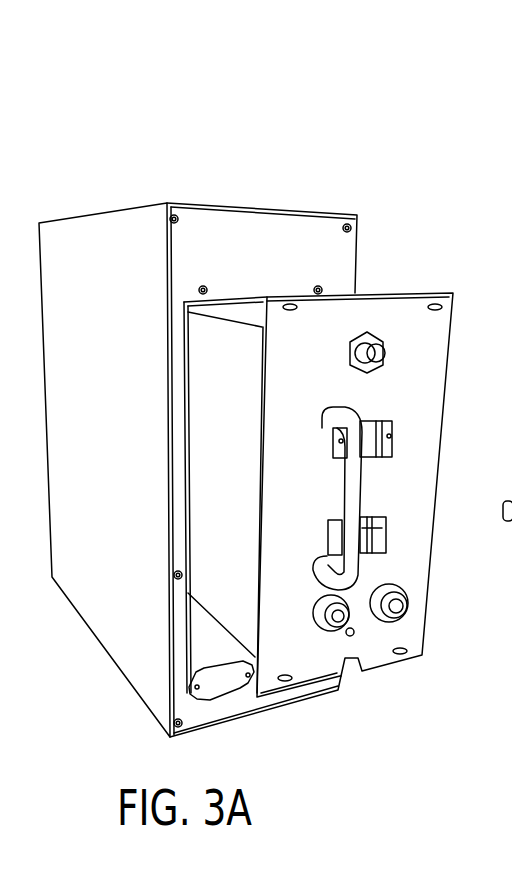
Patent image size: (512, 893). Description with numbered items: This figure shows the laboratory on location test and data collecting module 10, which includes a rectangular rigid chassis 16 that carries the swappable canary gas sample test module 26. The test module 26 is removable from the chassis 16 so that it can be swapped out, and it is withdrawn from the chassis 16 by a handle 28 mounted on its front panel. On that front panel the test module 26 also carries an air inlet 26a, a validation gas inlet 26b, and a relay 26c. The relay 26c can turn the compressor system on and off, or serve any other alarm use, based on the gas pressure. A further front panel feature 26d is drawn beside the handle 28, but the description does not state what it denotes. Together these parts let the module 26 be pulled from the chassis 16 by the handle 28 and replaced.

The laboratory on location test and data collecting module 10 is at (273, 150).
The rectangular rigid chassis 16 is at (347, 252).
The canary gas sample test module 26 is at (410, 276).
The air inlet 26a is at (340, 627).
The validation gas inlet 26b is at (397, 615).
The relay 26c is at (378, 353).
The handle bracket 26d is at (391, 423).
The handle 28 is at (385, 517).